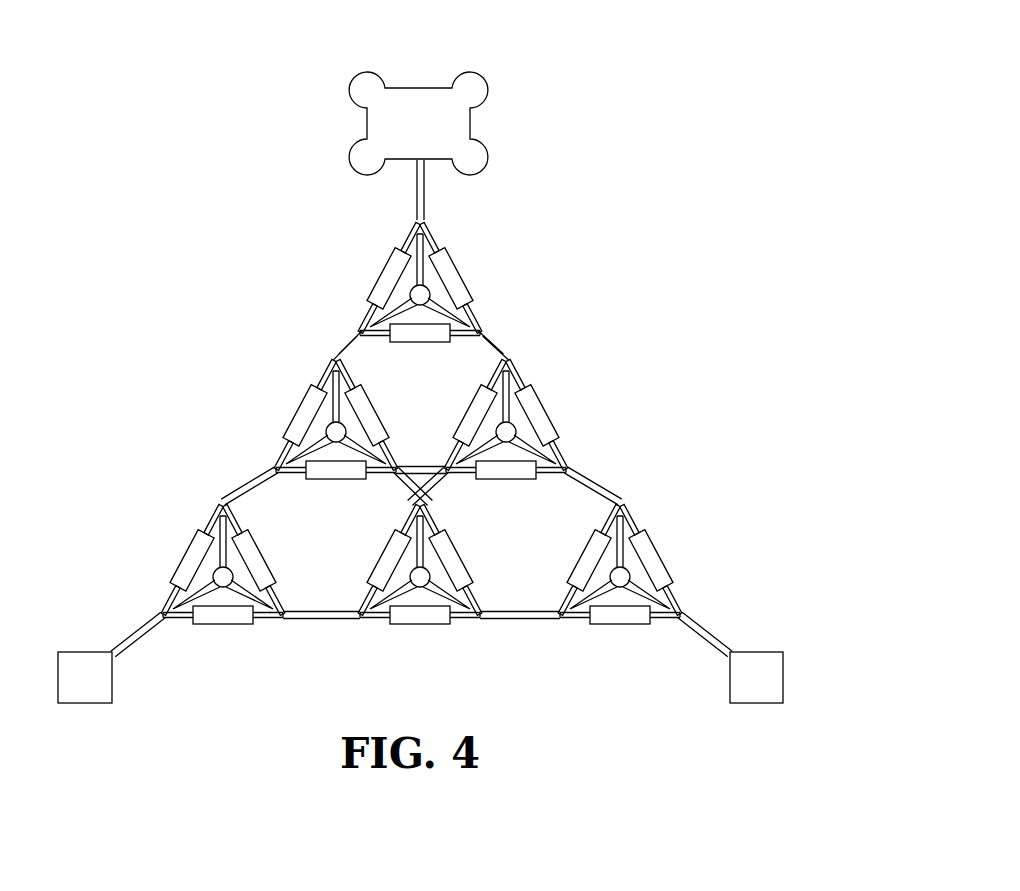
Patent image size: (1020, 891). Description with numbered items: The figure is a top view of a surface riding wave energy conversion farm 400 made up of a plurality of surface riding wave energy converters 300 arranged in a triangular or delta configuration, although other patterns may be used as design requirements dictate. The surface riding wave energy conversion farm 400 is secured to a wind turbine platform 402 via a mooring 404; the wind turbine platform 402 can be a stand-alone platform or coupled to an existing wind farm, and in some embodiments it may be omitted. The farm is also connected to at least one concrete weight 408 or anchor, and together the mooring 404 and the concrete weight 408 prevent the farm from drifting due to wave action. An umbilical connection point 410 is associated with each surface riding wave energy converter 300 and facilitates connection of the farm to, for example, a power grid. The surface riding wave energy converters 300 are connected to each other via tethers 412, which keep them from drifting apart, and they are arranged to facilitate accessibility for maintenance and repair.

The surface riding wave energy conversion farm 400 is at (762, 114).
The wind turbine platform 402 is at (478, 85).
The mooring 404 is at (417, 190).
The surface riding wave energy converter 300 is at (393, 277).
The umbilical connection point 410 is at (421, 304).
The tether 412 is at (352, 344).
The concrete weight 408 is at (86, 660).